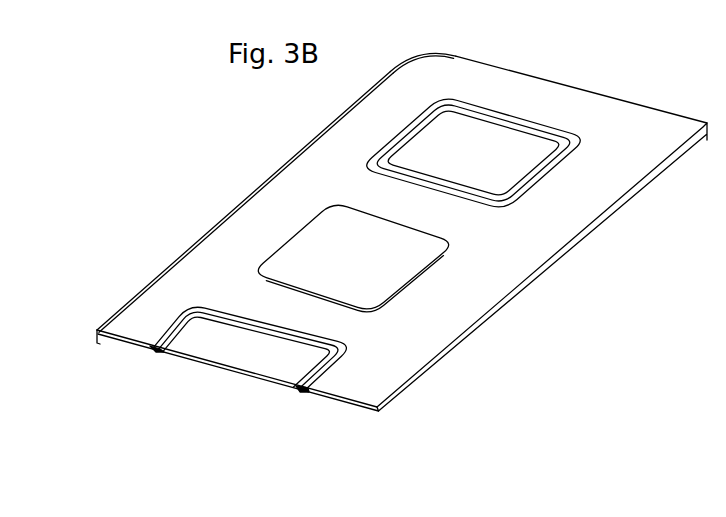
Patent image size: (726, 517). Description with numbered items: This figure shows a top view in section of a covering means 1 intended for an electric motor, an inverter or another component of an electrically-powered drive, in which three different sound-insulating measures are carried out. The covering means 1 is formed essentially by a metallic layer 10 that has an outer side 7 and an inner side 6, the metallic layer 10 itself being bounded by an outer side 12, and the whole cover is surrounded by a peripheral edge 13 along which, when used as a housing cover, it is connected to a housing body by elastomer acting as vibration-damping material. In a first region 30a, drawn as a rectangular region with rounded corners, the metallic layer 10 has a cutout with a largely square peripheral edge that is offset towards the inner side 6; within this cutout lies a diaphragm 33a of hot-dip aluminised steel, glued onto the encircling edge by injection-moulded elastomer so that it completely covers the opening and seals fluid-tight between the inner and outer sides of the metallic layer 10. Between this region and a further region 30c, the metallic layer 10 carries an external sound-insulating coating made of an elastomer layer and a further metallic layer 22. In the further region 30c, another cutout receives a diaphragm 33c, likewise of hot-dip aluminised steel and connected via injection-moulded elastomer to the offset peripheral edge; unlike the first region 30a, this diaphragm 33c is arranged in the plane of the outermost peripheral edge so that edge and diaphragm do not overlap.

The covering means 1 is at (598, 193).
The inner side 6 is at (350, 405).
The outer side 7 is at (642, 130).
The metallic layer 10 is at (438, 75).
The outer side of the metallic layer 12 is at (210, 257).
The peripheral edge 13 is at (96, 343).
The further metallic layer 22 is at (393, 268).
The first region 30a is at (212, 367).
The further region 30c is at (513, 152).
The diaphragm 33a is at (275, 362).
The diaphragm 33c is at (494, 178).